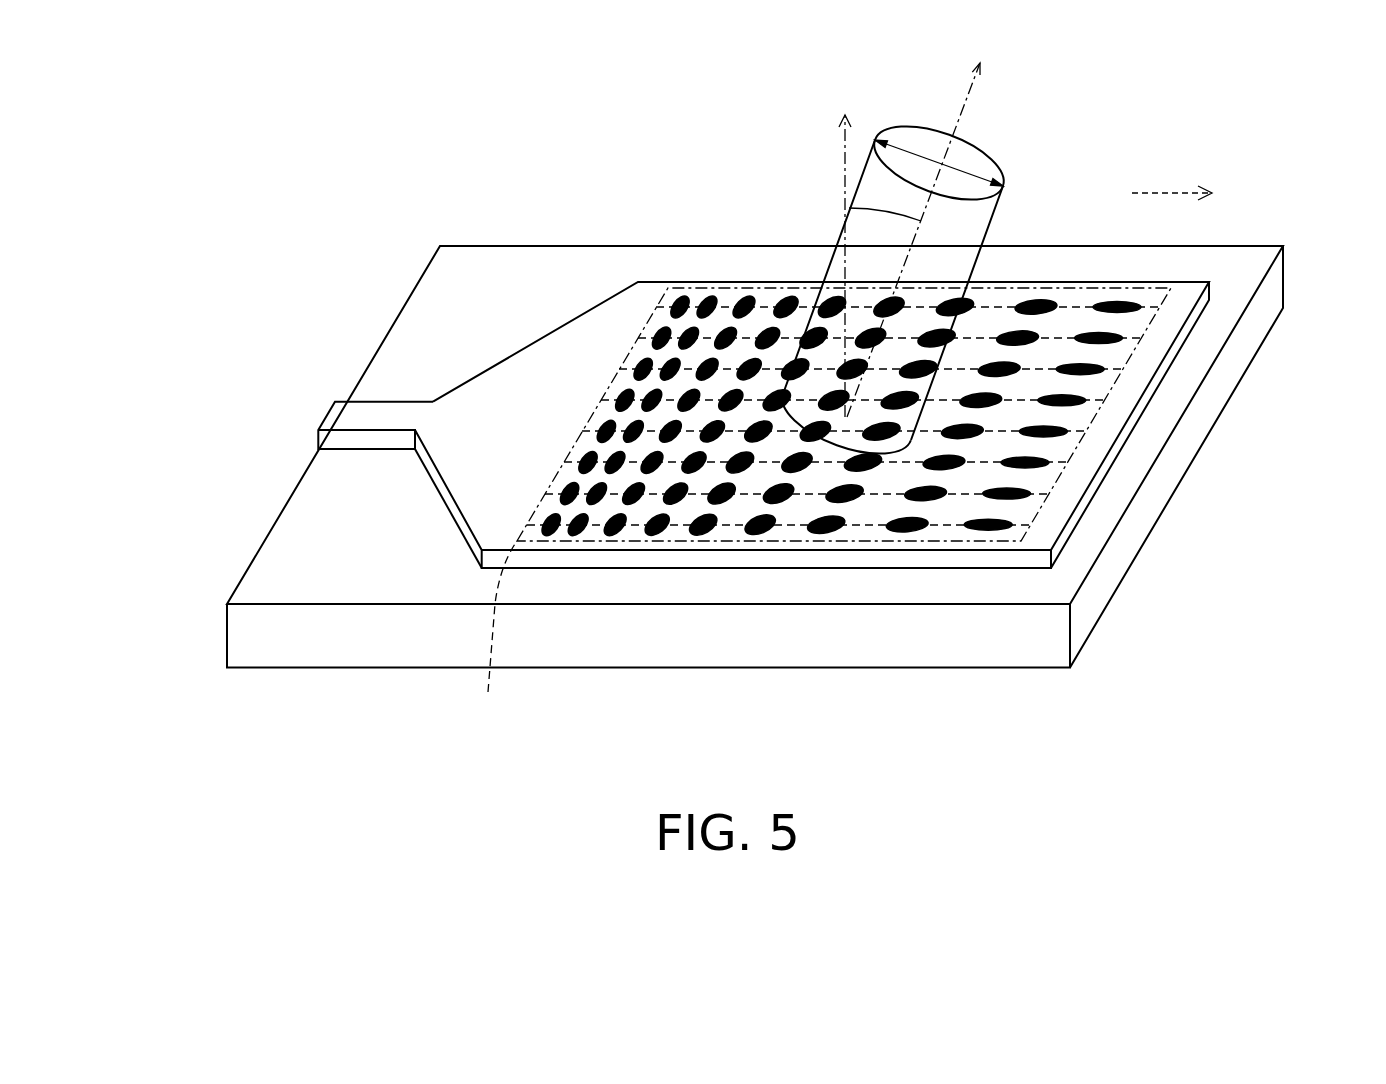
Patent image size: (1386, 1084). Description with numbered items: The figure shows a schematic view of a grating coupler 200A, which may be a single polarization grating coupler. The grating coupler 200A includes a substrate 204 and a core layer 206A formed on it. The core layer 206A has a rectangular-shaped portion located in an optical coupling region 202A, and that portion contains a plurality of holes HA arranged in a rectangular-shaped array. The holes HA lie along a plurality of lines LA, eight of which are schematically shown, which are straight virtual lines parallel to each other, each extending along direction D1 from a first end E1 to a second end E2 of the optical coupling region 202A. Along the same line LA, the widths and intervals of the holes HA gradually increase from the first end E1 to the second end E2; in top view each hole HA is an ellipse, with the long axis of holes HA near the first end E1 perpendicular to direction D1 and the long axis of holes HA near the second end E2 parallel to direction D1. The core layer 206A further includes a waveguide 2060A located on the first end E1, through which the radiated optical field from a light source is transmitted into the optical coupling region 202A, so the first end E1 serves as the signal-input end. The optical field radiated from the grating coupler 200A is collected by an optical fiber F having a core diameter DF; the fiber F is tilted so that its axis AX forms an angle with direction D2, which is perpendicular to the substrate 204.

The grating coupler 200A is at (784, 457).
The substrate 204 is at (1155, 495).
The core layer 206A is at (742, 425).
The waveguide 2060A is at (350, 418).
The optical coupling region 202A is at (644, 326).
The holes HA is at (712, 298).
The lines LA is at (493, 634).
The optical fiber F is at (970, 232).
The axis AX is at (922, 218).
The core diameter DF is at (968, 173).
The direction D1 is at (1189, 195).
The direction D2 is at (844, 243).
The first end E1 is at (380, 295).
The second end E2 is at (1275, 293).